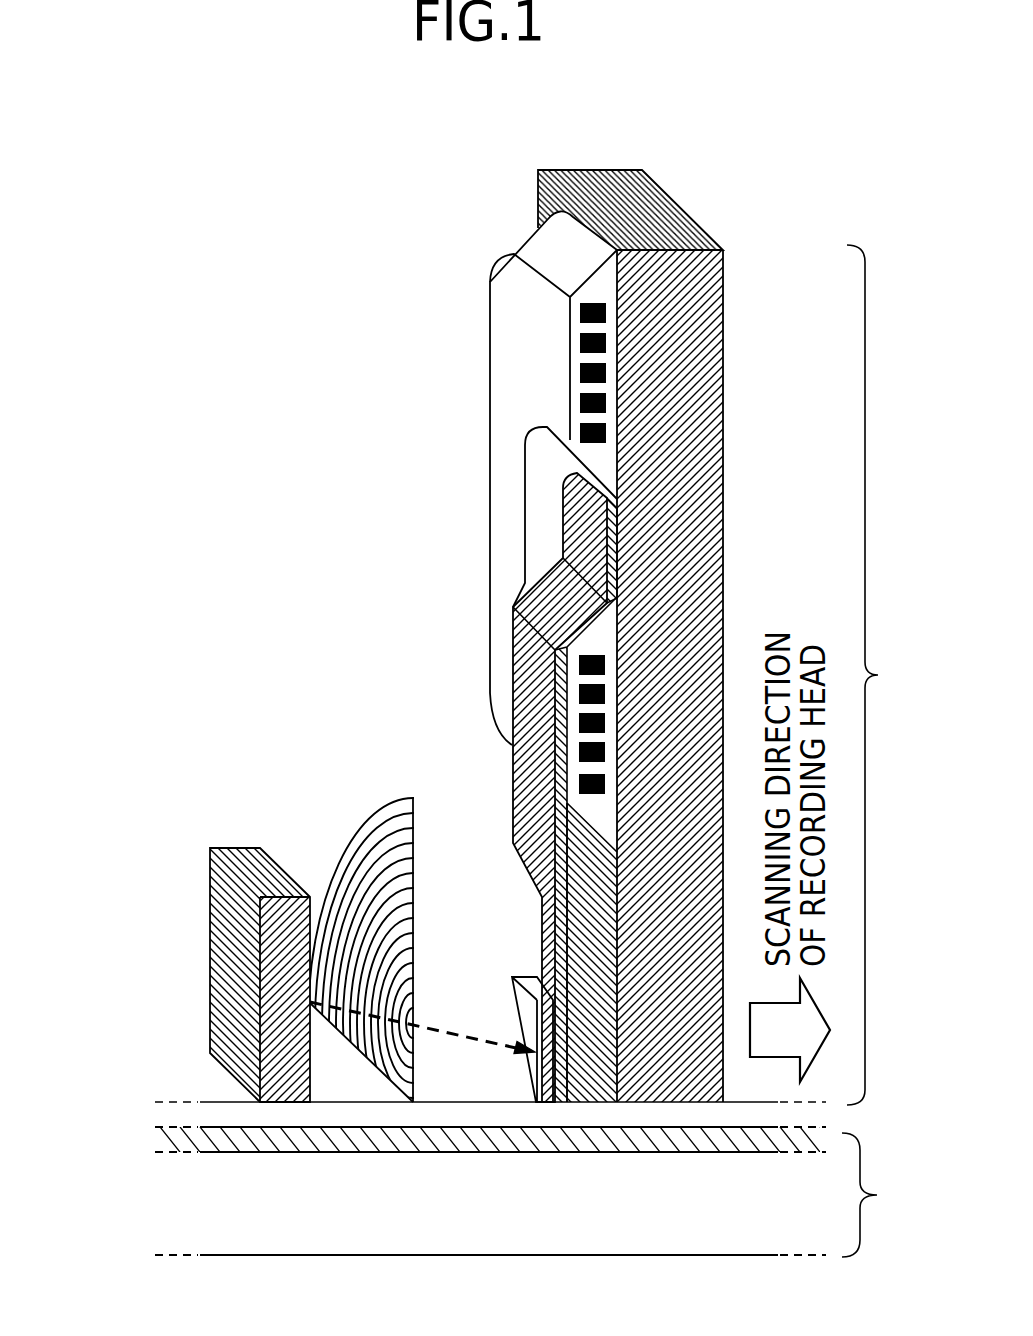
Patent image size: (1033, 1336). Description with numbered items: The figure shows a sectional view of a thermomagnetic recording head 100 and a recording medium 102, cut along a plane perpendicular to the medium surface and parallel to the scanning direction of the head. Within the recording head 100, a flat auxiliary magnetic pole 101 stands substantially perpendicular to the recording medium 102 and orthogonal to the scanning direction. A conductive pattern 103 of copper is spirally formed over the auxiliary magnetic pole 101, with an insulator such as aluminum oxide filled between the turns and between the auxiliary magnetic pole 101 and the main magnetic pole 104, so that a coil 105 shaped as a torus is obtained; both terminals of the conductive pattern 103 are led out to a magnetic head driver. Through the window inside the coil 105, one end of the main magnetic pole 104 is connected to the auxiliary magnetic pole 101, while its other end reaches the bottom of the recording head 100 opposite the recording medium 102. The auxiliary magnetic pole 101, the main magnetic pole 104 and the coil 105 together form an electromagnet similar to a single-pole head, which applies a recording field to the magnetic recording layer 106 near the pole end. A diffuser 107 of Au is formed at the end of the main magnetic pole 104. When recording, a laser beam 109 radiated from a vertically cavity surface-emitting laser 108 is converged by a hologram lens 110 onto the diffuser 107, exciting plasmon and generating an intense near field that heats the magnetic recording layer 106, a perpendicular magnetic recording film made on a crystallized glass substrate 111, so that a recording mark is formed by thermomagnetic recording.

The recording head 100 is at (896, 675).
The auxiliary magnetic pole 101 is at (697, 577).
The recording medium 102 is at (890, 1195).
The conductive pattern 103 is at (580, 403).
The main magnetic pole 104 is at (523, 763).
The coil 105 is at (512, 331).
The magnetic recording layer 106 is at (172, 1140).
The diffuser 107 is at (548, 1085).
The vertically cavity surface-emitting laser 108 is at (275, 857).
The laser beam 109 is at (457, 1033).
The hologram lens 110 is at (358, 877).
The crystallized glass substrate 111 is at (172, 1200).